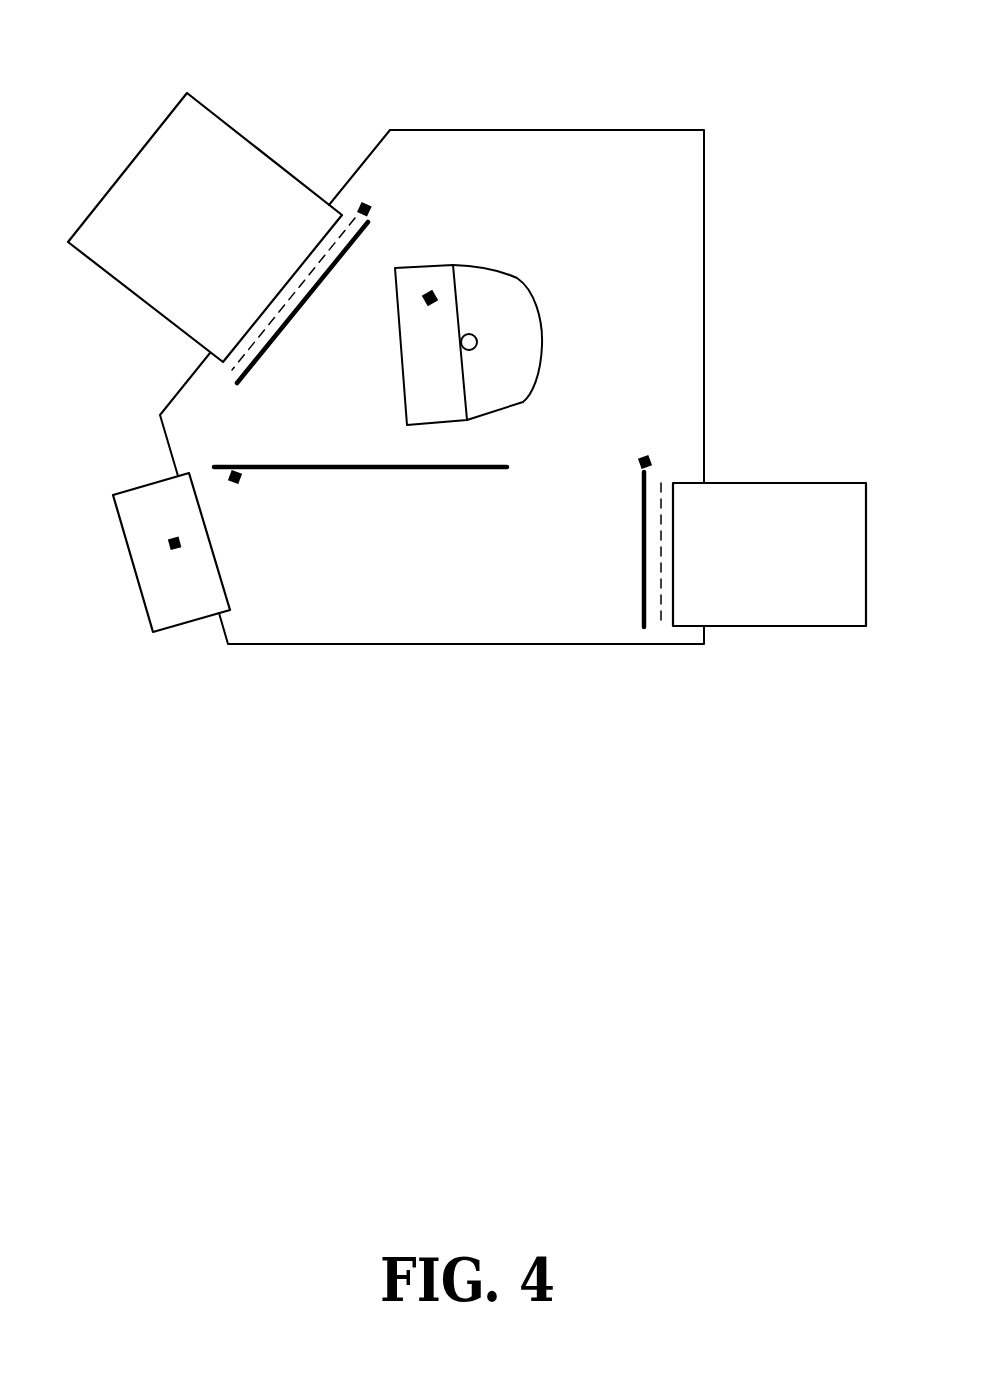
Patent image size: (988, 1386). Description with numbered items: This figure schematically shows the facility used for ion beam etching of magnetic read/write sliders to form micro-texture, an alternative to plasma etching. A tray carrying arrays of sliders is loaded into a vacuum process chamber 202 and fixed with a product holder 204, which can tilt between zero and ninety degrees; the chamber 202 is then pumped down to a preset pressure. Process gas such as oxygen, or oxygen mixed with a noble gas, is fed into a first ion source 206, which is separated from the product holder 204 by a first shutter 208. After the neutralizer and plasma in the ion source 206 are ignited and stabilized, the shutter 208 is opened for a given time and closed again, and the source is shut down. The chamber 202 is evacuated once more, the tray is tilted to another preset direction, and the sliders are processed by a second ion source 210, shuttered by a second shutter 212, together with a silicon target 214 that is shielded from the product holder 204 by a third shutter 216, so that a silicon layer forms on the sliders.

The vacuum process chamber 202 is at (578, 157).
The product holder 204 is at (428, 292).
The first ion source 206 is at (208, 133).
The first shutter 208 is at (365, 204).
The second ion source 210 is at (783, 612).
The second shutter 212 is at (645, 613).
The silicon target 214 is at (167, 603).
The third shutter 216 is at (333, 467).